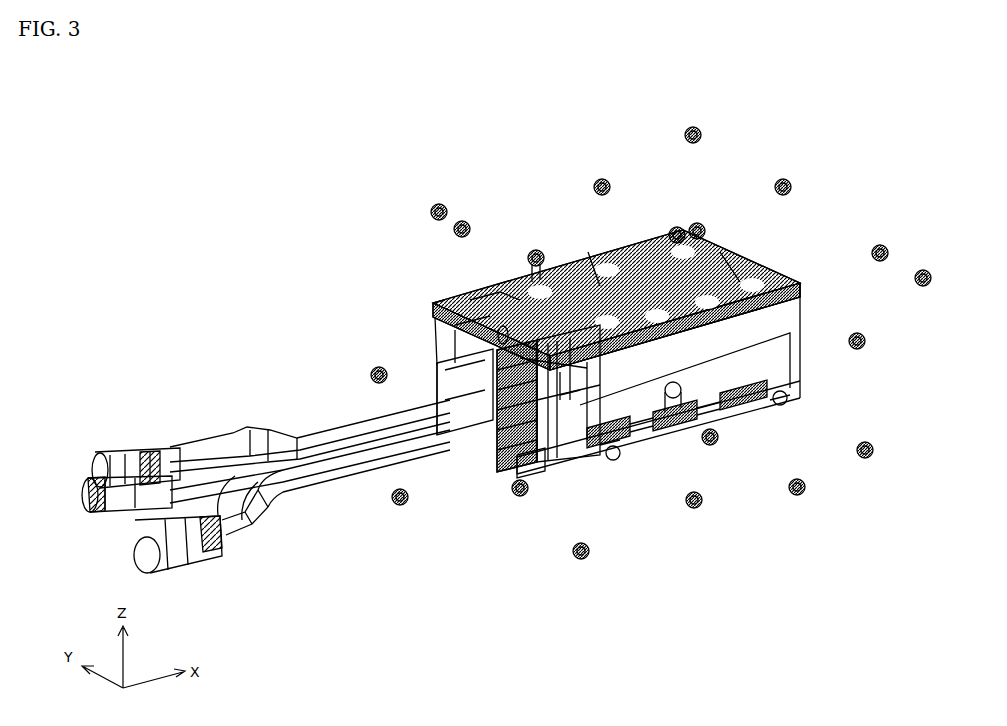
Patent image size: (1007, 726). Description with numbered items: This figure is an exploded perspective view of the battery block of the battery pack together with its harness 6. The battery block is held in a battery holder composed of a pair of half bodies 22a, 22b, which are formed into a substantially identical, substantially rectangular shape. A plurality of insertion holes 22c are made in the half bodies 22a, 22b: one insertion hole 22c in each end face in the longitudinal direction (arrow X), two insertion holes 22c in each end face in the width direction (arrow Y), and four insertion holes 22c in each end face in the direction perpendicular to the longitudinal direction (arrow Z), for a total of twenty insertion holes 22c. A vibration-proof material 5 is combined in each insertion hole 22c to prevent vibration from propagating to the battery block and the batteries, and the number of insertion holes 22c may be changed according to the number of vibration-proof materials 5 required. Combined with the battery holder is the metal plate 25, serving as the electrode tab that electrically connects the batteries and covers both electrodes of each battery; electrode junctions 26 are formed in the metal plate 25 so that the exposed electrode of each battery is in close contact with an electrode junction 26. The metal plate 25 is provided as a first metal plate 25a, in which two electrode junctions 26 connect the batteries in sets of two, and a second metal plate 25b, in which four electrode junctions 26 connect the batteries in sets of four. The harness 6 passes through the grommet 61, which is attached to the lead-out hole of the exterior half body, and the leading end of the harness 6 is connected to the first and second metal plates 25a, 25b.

The vibration-proof material 5 is at (534, 251).
The harness 6 is at (245, 545).
The half body 22a is at (776, 334).
The half body 22b is at (792, 370).
The insertion hole 22c is at (466, 303).
The metal plate 25 is at (630, 350).
The first metal plate 25a is at (480, 300).
The second metal plate 25b is at (600, 285).
The electrode junction 26 is at (672, 230).
The grommet 61 is at (433, 375).